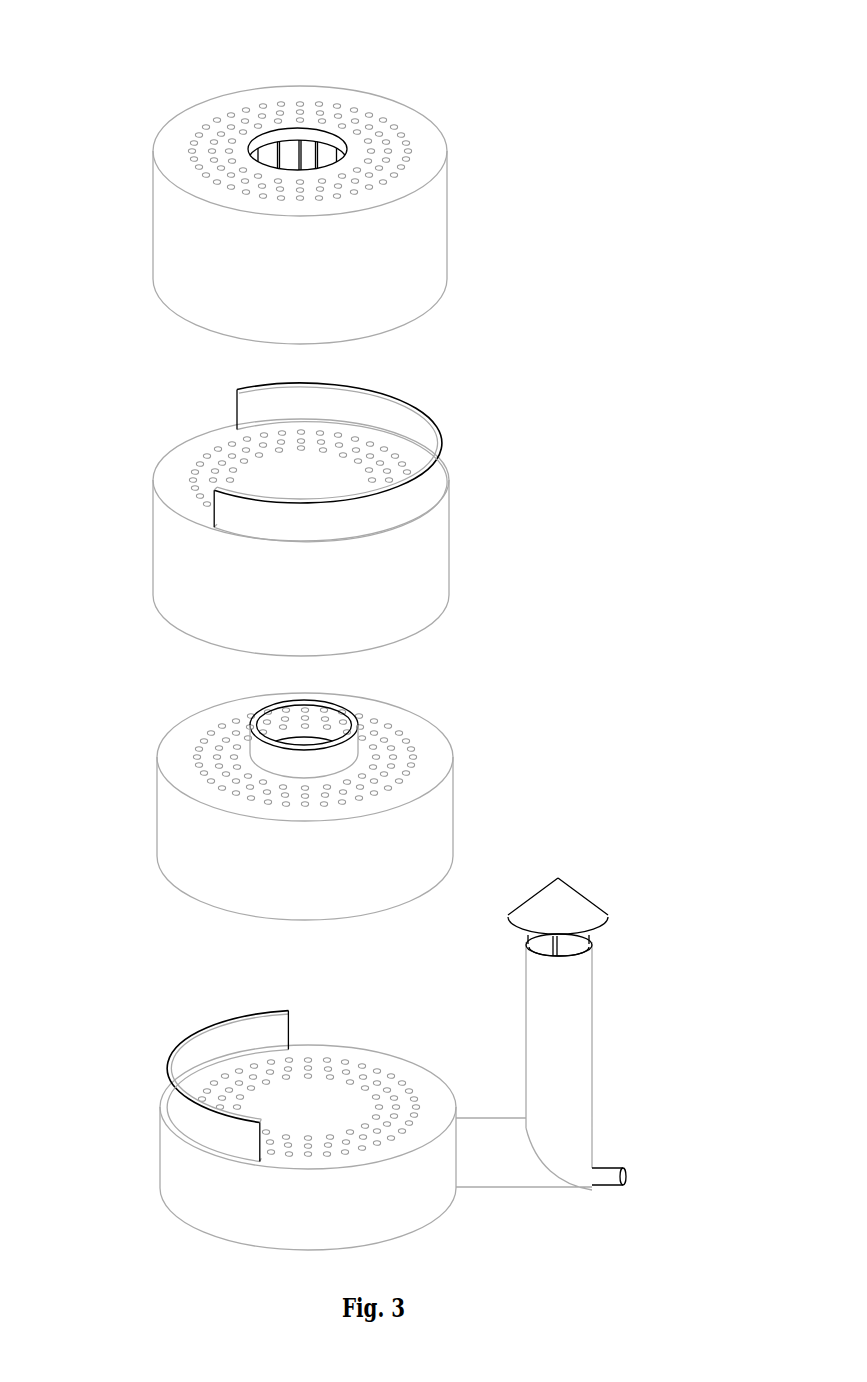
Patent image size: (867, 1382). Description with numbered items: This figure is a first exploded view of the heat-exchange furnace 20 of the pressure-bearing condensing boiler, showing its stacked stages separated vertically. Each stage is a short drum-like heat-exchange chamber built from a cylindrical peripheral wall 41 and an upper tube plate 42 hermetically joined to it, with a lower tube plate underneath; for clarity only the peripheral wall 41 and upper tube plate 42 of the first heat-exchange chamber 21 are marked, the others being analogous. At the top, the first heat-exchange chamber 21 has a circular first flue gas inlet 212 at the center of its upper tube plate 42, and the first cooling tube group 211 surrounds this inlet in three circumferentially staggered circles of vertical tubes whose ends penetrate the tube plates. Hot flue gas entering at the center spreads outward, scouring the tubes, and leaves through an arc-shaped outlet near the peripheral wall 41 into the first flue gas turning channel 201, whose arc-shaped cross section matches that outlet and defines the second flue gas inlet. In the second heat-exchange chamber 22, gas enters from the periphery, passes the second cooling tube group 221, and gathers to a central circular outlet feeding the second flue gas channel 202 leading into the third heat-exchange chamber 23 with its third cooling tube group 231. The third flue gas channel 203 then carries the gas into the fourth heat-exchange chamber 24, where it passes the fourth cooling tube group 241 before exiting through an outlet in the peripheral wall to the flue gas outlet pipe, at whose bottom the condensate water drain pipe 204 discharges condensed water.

The heat-exchange furnace 20 is at (627, 42).
The first heat-exchange chamber 21 is at (314, 199).
The peripheral wall 41 is at (151, 226).
The upper tube plate 42 is at (172, 140).
The first cooling tube group 211 is at (378, 133).
The first flue gas inlet 212 is at (307, 135).
The second heat-exchange chamber 22 is at (341, 515).
The second cooling tube group 221 is at (195, 460).
The first flue gas turning channel 201 is at (425, 480).
The third heat-exchange chamber 23 is at (345, 799).
The third cooling tube group 231 is at (197, 742).
The second flue gas channel 202 is at (305, 762).
The fourth heat-exchange chamber 24 is at (393, 1064).
The fourth cooling tube group 241 is at (355, 1058).
The third flue gas channel 203 is at (177, 1042).
The condensate water drain pipe 204 is at (613, 1167).